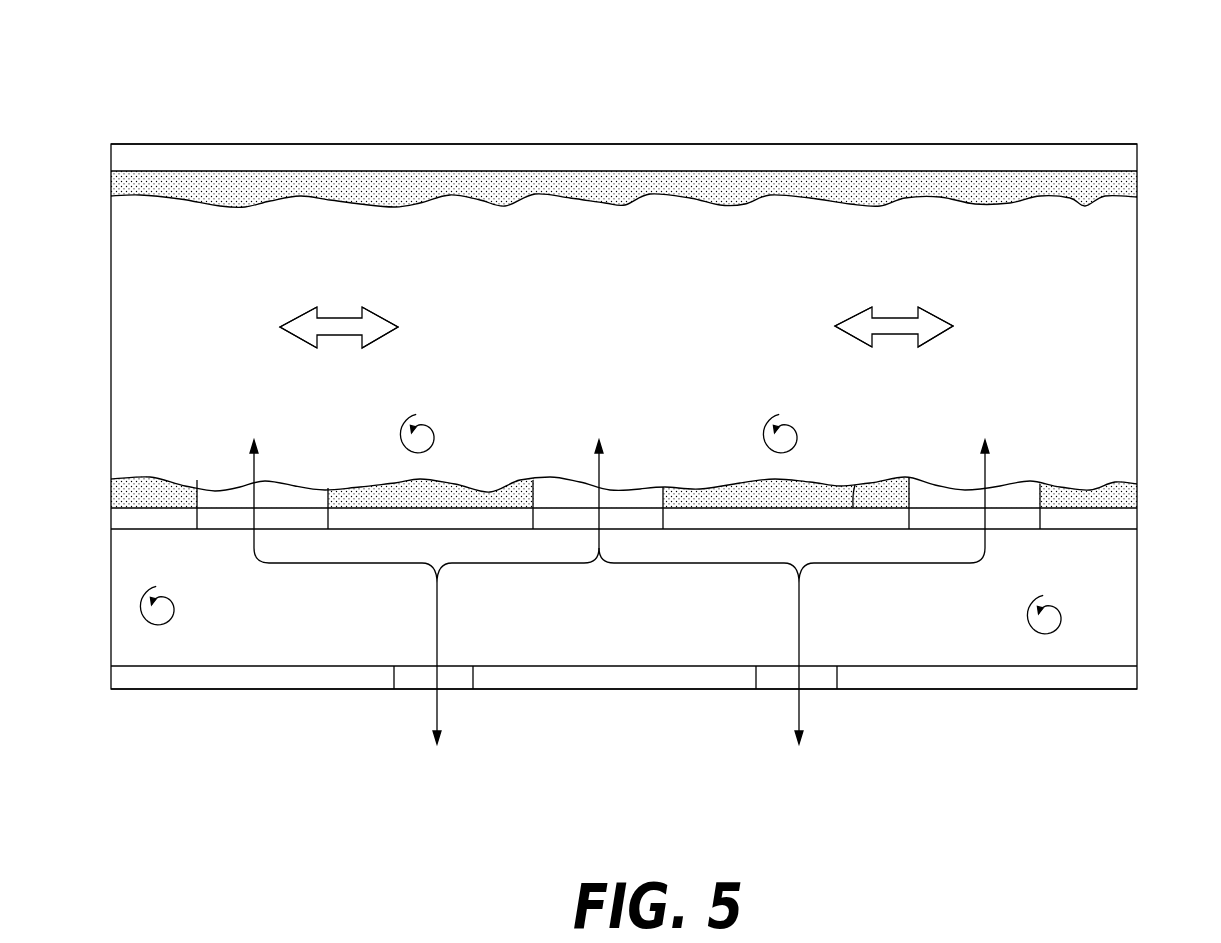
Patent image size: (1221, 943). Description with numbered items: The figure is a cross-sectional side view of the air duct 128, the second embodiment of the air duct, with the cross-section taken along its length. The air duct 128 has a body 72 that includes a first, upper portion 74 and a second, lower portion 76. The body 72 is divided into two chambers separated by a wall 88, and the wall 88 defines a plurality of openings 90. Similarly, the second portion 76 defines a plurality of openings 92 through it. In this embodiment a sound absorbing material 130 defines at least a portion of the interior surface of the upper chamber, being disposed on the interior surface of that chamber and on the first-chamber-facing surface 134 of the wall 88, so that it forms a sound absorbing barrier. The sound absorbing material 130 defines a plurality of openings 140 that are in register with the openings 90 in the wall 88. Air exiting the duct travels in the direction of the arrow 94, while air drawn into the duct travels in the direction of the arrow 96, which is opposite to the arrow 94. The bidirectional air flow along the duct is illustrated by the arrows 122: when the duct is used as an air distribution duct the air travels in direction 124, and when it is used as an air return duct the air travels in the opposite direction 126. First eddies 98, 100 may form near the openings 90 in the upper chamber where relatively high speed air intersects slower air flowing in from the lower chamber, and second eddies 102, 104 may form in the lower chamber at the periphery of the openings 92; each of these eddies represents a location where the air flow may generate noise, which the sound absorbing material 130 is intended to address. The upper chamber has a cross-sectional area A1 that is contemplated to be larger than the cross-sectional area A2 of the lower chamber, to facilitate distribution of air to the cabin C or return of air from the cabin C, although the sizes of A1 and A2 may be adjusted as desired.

The body 72 is at (630, 143).
The first portion 74 is at (750, 160).
The second portion 76 is at (266, 690).
The wall 88 is at (432, 518).
The openings 90 is at (297, 518).
The openings 92 is at (461, 690).
The arrow 94 is at (435, 733).
The arrow 96 is at (258, 453).
The first eddy 98 is at (762, 420).
The first eddy 100 is at (398, 424).
The second eddy 102 is at (1068, 608).
The second eddy 104 is at (182, 615).
The arrows 122 is at (340, 318).
The direction 124 is at (383, 313).
The opposite direction 126 is at (296, 336).
The air duct 128 is at (898, 72).
The sound absorbing material 130 is at (1082, 207).
The first-chamber-facing surface 134 is at (855, 485).
The openings 140 is at (216, 492).
The cross-sectional area A1 is at (138, 367).
The cross-sectional area A2 is at (132, 650).
The cabin C is at (278, 854).